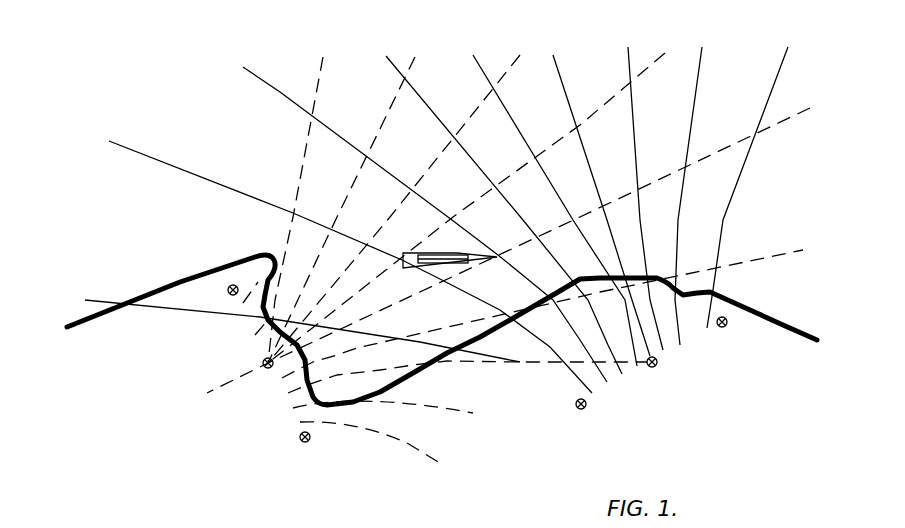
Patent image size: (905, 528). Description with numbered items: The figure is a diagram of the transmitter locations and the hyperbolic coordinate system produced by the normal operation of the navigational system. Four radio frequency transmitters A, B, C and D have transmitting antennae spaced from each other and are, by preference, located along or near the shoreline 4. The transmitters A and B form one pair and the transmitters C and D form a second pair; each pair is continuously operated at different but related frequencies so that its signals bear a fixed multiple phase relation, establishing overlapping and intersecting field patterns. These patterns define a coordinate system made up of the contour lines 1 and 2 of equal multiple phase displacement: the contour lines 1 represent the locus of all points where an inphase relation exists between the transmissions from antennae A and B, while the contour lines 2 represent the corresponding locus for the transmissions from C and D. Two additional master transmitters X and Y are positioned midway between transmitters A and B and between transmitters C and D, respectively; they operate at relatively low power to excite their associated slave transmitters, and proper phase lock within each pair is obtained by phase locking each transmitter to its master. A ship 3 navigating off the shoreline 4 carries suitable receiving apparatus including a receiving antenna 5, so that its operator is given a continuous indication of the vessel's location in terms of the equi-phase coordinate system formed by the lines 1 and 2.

The contour lines 1 is at (514, 119).
The contour lines 2 is at (575, 218).
The ship 3 is at (412, 253).
The shoreline 4 is at (427, 370).
The receiving antenna 5 is at (451, 263).
The transmitter A is at (576, 414).
The transmitter B is at (727, 330).
The transmitter C is at (224, 291).
The transmitter D is at (300, 446).
The master transmitter X is at (659, 366).
The master transmitter Y is at (264, 374).